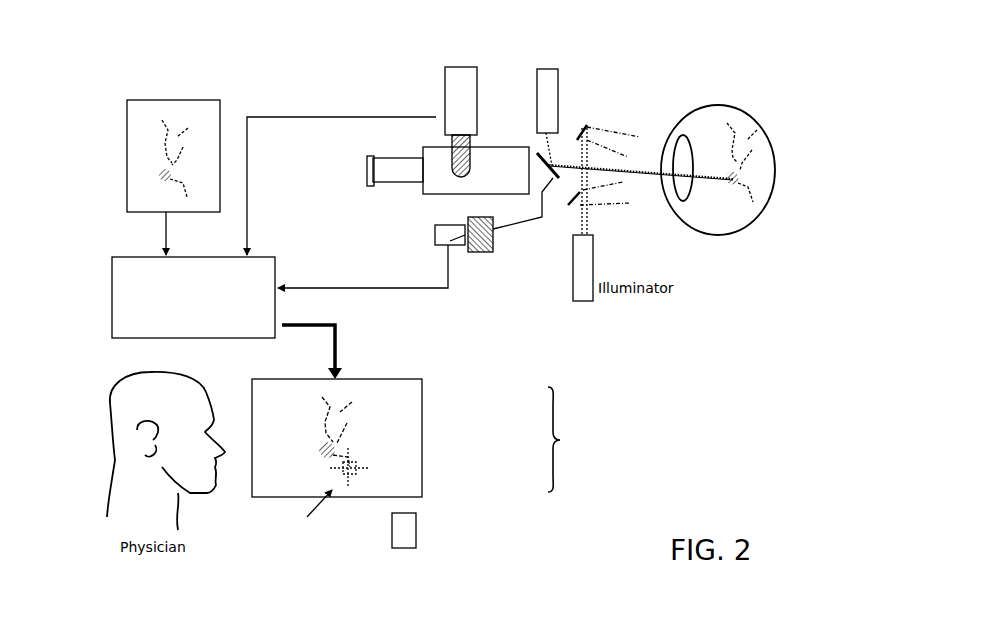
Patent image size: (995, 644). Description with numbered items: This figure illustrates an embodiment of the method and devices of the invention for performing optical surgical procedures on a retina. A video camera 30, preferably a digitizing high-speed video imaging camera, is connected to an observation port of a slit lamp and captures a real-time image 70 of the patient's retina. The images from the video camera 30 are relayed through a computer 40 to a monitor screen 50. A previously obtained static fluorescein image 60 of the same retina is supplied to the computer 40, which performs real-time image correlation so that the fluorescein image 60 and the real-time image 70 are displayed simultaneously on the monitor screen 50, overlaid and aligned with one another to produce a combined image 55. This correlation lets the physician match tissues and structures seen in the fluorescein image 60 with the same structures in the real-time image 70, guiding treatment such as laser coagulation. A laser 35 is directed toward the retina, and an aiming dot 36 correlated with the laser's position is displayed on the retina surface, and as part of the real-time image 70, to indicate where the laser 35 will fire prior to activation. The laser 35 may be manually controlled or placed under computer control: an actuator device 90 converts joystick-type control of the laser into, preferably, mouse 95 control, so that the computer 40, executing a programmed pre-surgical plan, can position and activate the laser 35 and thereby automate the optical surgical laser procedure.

The video camera 30 is at (444, 117).
The laser 35 is at (613, 135).
The aiming dot 36 is at (735, 186).
The computer 40 is at (112, 284).
The monitor screen 50 is at (392, 379).
The combined image 55 is at (519, 439).
The fluorescein image 60 is at (127, 135).
The real-time image 70 is at (733, 234).
The actuator device 90 is at (452, 245).
The mouse 95 is at (405, 548).